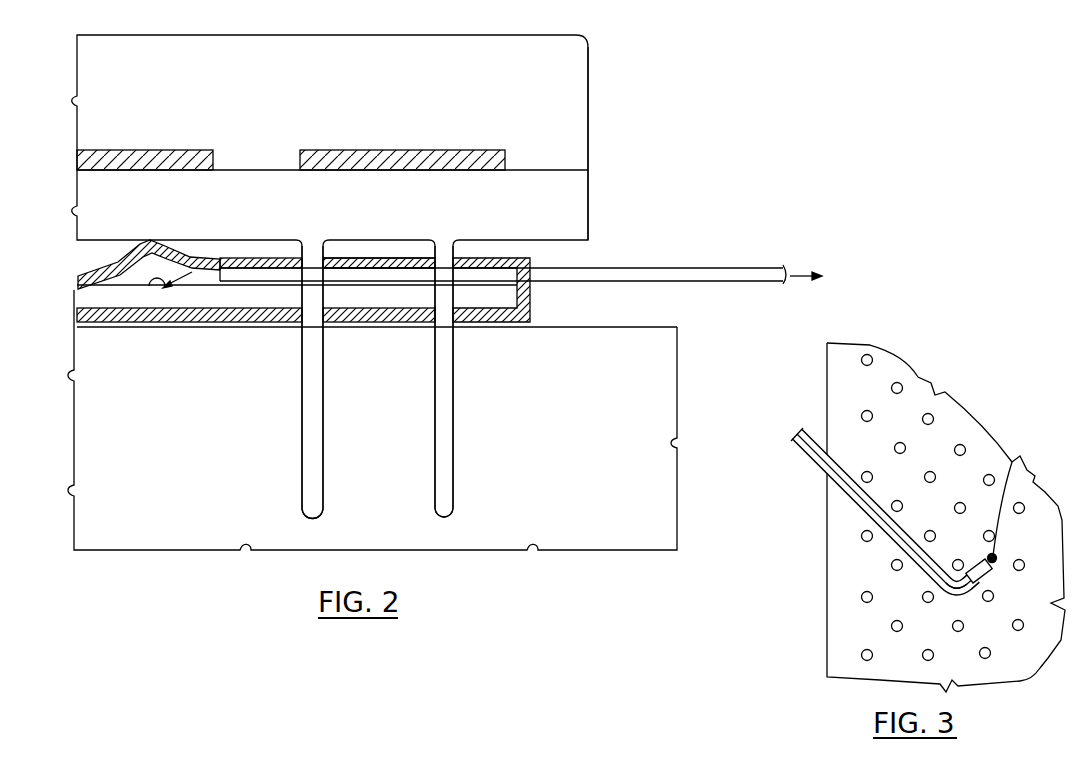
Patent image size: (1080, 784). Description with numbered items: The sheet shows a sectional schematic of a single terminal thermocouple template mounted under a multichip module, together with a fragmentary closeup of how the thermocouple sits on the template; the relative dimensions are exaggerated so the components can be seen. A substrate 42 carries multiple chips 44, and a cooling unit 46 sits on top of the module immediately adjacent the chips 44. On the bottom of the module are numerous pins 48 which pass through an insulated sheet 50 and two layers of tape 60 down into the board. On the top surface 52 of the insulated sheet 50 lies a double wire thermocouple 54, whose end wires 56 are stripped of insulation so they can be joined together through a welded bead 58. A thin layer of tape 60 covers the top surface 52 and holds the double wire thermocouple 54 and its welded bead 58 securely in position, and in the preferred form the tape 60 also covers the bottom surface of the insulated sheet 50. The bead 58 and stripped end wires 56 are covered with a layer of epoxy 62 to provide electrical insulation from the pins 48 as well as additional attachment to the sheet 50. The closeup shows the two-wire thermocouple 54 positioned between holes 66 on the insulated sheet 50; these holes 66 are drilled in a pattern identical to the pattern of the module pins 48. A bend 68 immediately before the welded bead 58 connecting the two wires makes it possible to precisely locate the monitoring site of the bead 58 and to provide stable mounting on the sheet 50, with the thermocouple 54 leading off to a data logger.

In FIG. 2, the substrate 42 is at (588, 222).
In FIG. 2, the chips 44 is at (178, 151).
In FIG. 2, the cooling unit 46 is at (345, 59).
In FIG. 2, the pins 48 is at (323, 460).
In FIG. 2, the insulated sheet 50 is at (252, 296).
In FIG. 3, the insulated sheet 50 is at (840, 620).
In FIG. 2, the top surface 52 is at (388, 262).
In FIG. 2, the double wire thermocouple 54 is at (688, 266).
In FIG. 3, the double wire thermocouple 54 is at (818, 481).
In FIG. 2, the end wires 56 is at (200, 287).
In FIG. 3, the end wires 56 is at (988, 578).
In FIG. 2, the welded bead 58 is at (155, 290).
In FIG. 3, the welded bead 58 is at (1006, 466).
In FIG. 2, the tape 60 is at (288, 272).
In FIG. 2, the layer of epoxy 62 is at (125, 260).
In FIG. 3, the holes 66 is at (931, 472).
In FIG. 3, the bend 68 is at (965, 598).